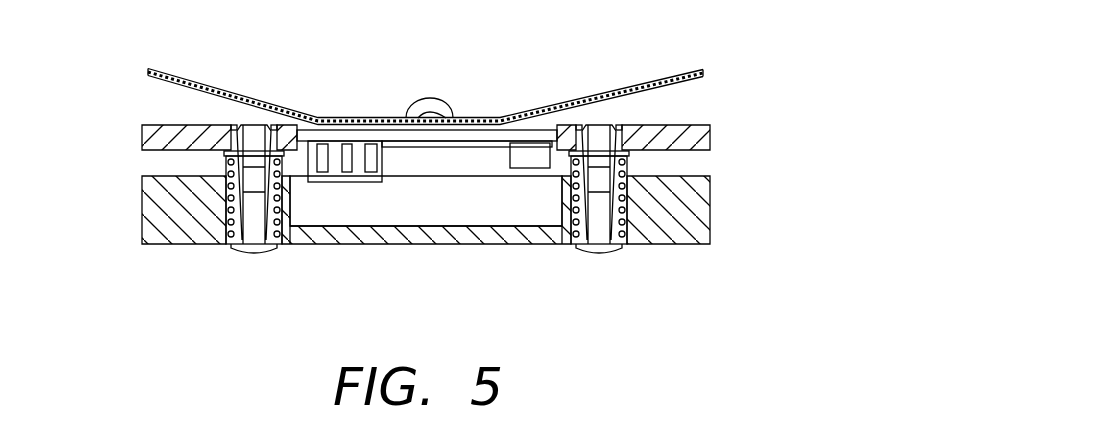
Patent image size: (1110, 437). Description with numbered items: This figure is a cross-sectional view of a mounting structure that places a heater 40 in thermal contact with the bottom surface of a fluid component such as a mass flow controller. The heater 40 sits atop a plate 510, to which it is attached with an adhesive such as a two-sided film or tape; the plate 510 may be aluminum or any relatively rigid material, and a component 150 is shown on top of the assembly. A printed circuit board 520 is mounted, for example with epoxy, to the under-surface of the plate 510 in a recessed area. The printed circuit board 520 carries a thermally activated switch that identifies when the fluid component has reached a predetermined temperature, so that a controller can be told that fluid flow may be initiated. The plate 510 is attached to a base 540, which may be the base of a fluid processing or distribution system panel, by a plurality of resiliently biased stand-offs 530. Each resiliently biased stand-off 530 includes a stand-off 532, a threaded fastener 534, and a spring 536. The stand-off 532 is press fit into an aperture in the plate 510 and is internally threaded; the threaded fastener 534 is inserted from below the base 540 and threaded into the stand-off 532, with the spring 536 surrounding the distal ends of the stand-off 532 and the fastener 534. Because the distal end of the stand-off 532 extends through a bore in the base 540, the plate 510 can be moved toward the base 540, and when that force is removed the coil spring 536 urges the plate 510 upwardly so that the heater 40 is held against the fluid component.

The heater 40 is at (703, 72).
The sensor dome 150 is at (430, 107).
The plate 510 is at (710, 125).
The printed circuit board 520 is at (433, 142).
The resiliently biased stand-off 530 is at (284, 255).
The stand-off 532 is at (240, 124).
The threaded fastener 534 is at (227, 160).
The spring 536 is at (227, 217).
The base 540 is at (710, 177).